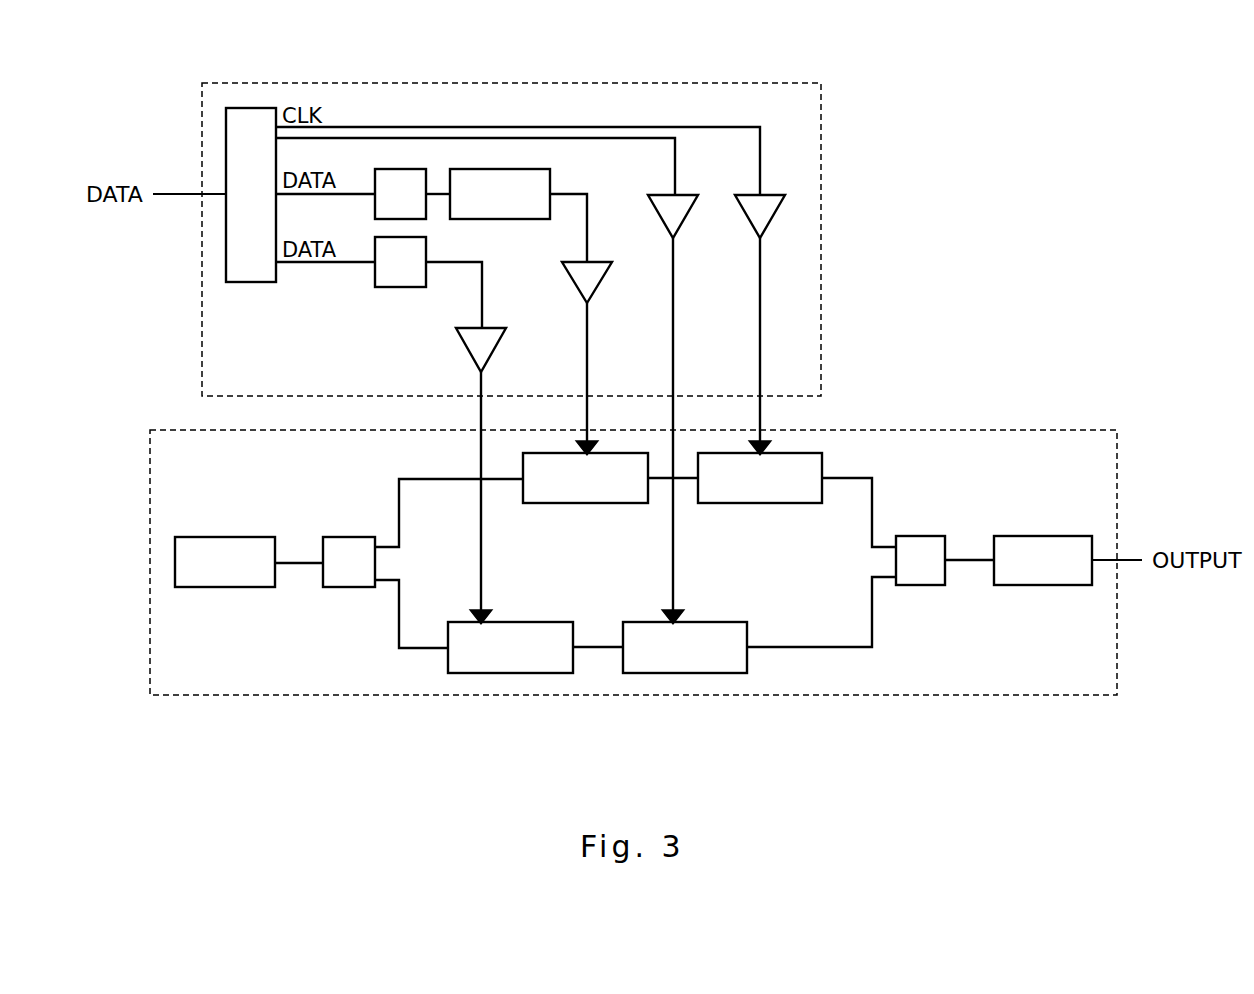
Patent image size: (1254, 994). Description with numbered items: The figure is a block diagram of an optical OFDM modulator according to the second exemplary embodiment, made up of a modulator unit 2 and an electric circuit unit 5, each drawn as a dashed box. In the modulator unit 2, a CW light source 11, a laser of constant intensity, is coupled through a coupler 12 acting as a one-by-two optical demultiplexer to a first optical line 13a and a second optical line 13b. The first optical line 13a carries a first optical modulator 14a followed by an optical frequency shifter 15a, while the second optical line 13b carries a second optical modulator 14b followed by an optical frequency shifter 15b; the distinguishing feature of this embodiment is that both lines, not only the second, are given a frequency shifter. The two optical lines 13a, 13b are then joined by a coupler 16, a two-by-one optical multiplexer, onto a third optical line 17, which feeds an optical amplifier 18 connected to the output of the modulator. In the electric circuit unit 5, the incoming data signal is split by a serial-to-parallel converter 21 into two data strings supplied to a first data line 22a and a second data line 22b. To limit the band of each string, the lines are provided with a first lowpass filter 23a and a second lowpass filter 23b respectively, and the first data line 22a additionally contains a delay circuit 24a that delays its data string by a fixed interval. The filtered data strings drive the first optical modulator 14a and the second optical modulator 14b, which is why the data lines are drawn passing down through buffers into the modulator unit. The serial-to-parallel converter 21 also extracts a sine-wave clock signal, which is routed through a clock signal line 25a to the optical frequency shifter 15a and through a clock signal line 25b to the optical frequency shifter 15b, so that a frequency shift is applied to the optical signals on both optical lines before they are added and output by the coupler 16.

The modulator unit 2 is at (990, 428).
The electric circuit unit 5 is at (821, 160).
The CW light source 11 is at (226, 587).
The coupler 12 is at (349, 587).
The first optical line 13a is at (399, 485).
The second optical line 13b is at (417, 648).
The first optical modulator 14a is at (597, 503).
The second optical modulator 14b is at (511, 673).
The optical frequency shifter 15a is at (758, 503).
The optical frequency shifter 15b is at (685, 673).
The coupler 16 is at (920, 585).
The third optical line 17 is at (970, 560).
The optical amplifier 18 is at (1042, 585).
The serial-to-parallel converter 21 is at (251, 108).
The first data line 22a is at (356, 194).
The second data line 22b is at (312, 262).
The first lowpass filter 23a is at (413, 169).
The second lowpass filter 23b is at (387, 287).
The delay circuit 24a is at (499, 169).
The clock signal line 25a is at (667, 127).
The clock signal line 25b is at (584, 138).